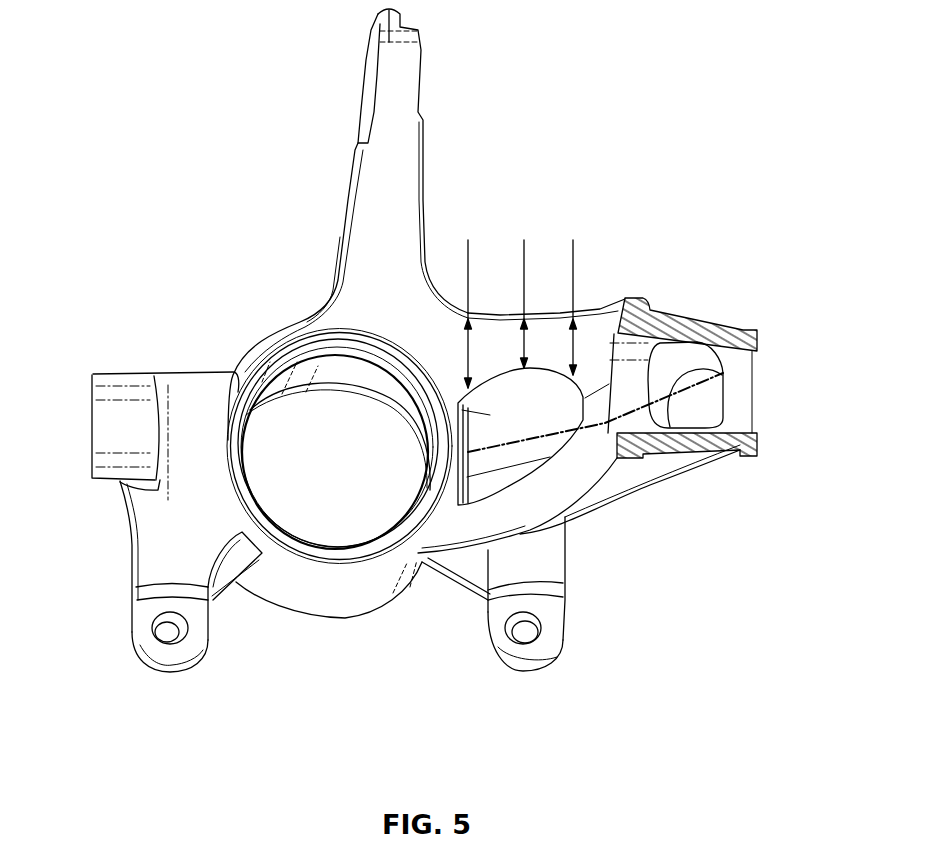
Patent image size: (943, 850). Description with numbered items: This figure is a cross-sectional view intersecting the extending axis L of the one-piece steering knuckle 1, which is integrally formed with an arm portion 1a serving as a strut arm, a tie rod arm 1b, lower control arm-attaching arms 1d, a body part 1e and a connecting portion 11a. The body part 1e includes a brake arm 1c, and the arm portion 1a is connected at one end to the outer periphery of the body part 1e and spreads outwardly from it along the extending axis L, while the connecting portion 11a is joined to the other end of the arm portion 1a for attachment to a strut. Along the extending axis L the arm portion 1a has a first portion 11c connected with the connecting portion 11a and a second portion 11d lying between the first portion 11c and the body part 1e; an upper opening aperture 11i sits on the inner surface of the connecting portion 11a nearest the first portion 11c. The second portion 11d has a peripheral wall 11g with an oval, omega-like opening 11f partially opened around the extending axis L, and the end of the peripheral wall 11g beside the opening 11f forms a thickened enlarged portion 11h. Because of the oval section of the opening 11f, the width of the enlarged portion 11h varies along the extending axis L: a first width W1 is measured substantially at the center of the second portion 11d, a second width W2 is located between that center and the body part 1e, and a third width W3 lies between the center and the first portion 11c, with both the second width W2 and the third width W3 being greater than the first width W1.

The steering knuckle 1 is at (668, 148).
The arm portion 1a is at (782, 552).
The tie rod arm 1b is at (388, 72).
The brake arm 1c is at (148, 647).
The lower control arm-attaching arms 1d is at (102, 425).
The body part 1e is at (338, 598).
The connecting portion 11a is at (686, 328).
The first portion 11c is at (632, 513).
The second portion 11d is at (548, 557).
The opening 11f is at (487, 415).
The peripheral wall 11g is at (481, 321).
The enlarged portion 11h is at (450, 343).
The upper opening aperture 11i is at (690, 370).
The extending axis L is at (704, 447).
The first width W1 is at (509, 304).
The second width W2 is at (454, 314).
The third width W3 is at (558, 307).